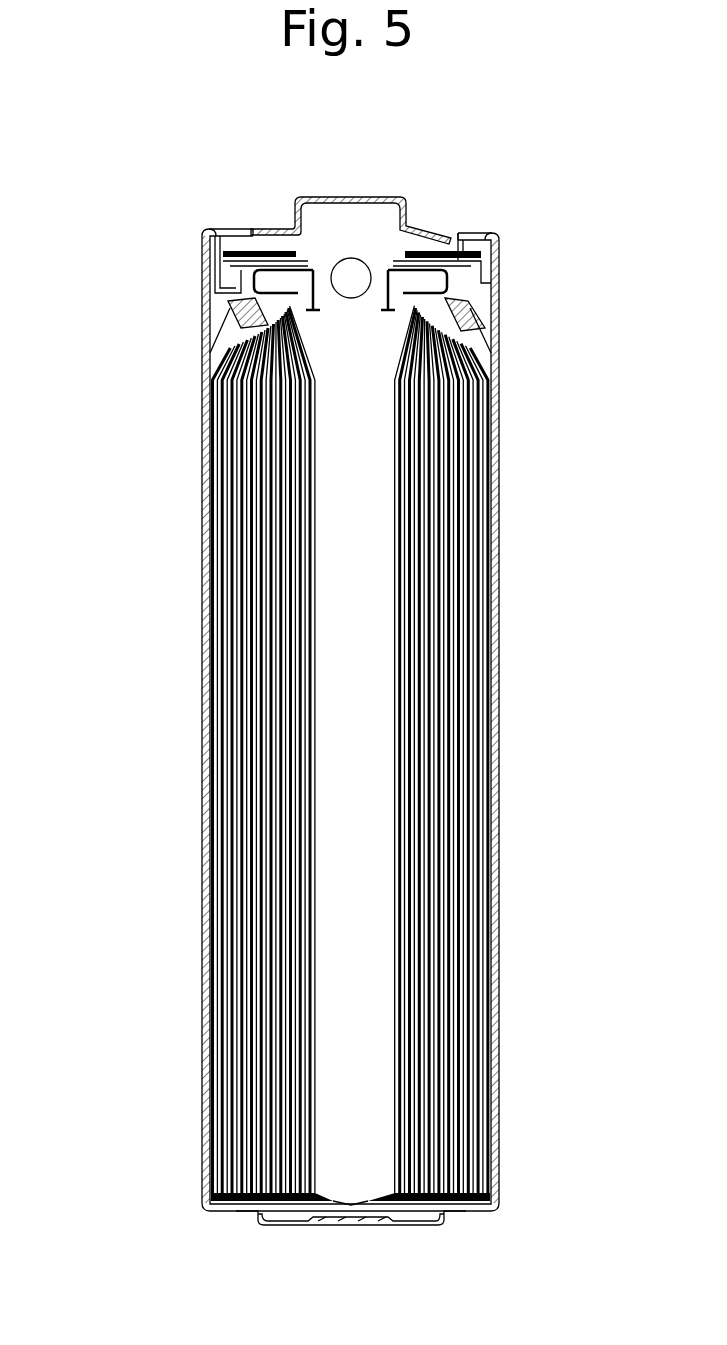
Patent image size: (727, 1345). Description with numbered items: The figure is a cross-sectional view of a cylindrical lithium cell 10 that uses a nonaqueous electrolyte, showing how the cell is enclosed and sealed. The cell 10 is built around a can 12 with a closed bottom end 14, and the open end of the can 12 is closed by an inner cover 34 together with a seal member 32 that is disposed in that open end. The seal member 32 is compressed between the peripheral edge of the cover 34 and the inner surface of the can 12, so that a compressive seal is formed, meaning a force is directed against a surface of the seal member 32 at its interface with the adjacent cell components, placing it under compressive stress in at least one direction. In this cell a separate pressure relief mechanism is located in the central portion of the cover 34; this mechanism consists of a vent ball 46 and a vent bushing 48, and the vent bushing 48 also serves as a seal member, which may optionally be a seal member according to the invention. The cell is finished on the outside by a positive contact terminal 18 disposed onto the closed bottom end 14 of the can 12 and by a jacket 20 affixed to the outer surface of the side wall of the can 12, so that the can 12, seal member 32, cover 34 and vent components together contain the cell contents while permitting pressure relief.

The cell 10 is at (368, 165).
The can 12 is at (203, 340).
The closed bottom end 14 is at (273, 1212).
The positive contact terminal 18 is at (287, 190).
The jacket 20 is at (196, 680).
The seal member 32 is at (200, 276).
The cover 34 is at (492, 298).
The vent ball 46 is at (345, 266).
The vent bushing 48 is at (385, 235).